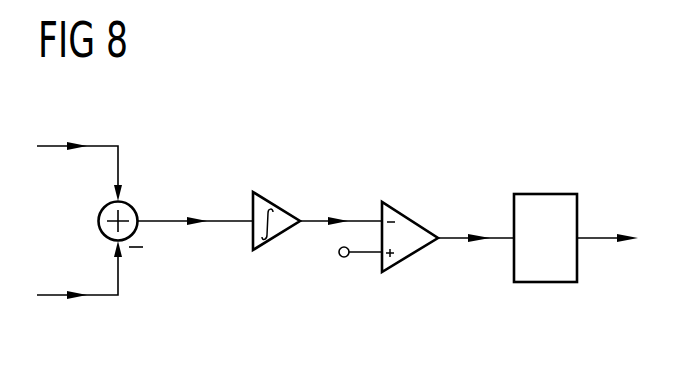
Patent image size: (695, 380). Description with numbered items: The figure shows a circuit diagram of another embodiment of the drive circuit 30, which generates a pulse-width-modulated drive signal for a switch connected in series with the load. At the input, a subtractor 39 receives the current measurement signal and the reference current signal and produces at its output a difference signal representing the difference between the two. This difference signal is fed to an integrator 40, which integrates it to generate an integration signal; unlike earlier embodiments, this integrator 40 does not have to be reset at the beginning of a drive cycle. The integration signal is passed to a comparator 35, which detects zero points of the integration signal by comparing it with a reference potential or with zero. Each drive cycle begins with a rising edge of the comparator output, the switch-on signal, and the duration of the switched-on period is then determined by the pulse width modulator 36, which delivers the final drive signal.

The drive circuit 30 is at (562, 144).
The subtractor 39 is at (98, 220).
The integrator 40 is at (277, 203).
The comparator 35 is at (418, 218).
The pulse width modulator 36 is at (547, 282).